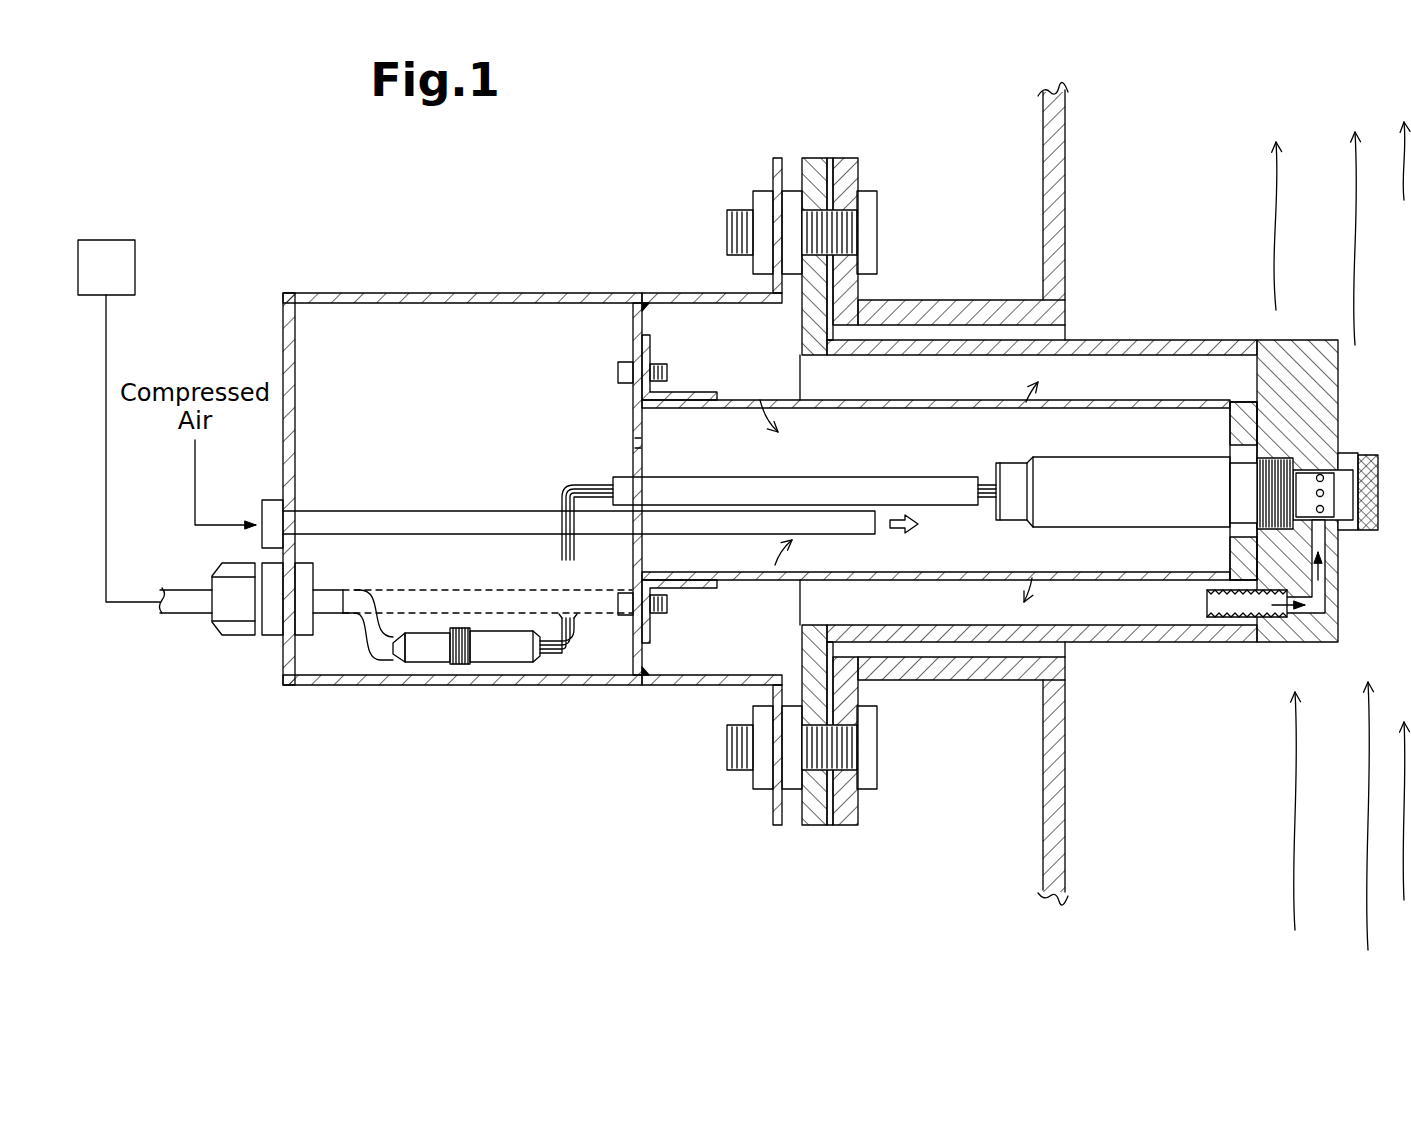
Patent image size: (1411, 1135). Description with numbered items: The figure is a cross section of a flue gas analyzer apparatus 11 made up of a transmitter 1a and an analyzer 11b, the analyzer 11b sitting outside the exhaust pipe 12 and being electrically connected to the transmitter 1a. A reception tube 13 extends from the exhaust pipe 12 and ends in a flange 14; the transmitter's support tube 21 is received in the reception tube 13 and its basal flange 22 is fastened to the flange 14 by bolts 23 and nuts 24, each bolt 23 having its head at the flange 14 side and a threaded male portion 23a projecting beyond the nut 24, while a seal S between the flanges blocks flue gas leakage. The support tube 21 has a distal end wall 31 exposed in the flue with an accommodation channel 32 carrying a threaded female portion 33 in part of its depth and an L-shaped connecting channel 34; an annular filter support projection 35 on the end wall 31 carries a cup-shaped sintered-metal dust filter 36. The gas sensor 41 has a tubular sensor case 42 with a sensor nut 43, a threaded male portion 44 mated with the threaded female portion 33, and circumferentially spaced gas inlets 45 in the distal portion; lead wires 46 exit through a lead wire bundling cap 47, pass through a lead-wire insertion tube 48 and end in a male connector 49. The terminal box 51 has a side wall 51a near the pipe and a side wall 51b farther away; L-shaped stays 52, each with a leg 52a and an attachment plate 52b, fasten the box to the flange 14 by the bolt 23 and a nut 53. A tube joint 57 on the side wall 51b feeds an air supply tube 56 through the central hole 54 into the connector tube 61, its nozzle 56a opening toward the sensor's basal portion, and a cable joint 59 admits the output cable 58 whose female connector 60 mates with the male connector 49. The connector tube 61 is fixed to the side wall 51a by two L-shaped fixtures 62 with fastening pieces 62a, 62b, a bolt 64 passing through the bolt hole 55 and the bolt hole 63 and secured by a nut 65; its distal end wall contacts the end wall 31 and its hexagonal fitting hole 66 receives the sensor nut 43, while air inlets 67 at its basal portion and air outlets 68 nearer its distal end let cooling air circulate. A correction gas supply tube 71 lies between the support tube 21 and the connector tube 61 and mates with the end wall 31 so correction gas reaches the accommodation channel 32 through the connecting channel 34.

The transmitter 1a is at (327, 289).
The flue gas analyzer apparatus 11 is at (318, 192).
The analyzer 11b is at (110, 240).
The exhaust pipe 12 is at (1043, 168).
The reception tube 13 is at (950, 300).
The flange 14 is at (845, 158).
The seal S is at (830, 158).
The support tube 21 is at (1110, 340).
The flange 22 is at (810, 131).
The bolt 23 is at (877, 205).
The threaded male portion 23a is at (727, 216).
The nut 24 is at (792, 274).
The distal end wall 31 is at (1291, 340).
The accommodation channel 32 is at (1305, 465).
The threaded female portion 33 is at (1268, 458).
The connecting channel 34 is at (1326, 608).
The filter support projection 35 is at (1348, 453).
The dust filter 36 is at (1372, 455).
The gas sensor 41 is at (1108, 454).
The sensor case 42 is at (1138, 458).
The sensor nut 43 is at (1240, 493).
The threaded male portion 44 is at (1252, 540).
The gas inlets 45 is at (1336, 520).
The lead wires 46 is at (568, 483).
The lead wire bundling cap 47 is at (996, 465).
The lead-wire insertion tube 48 is at (858, 477).
The male connector 49 is at (495, 665).
The terminal box 51 is at (468, 292).
The side wall 51a is at (633, 327).
The side wall 51b is at (283, 342).
The stay 52 is at (646, 292).
The leg 52a is at (713, 292).
The attachment plate 52b is at (776, 157).
The nut 53 is at (760, 191).
The central hole 54 is at (643, 445).
The bolt hole 55 is at (618, 372).
The air supply tube 56 is at (458, 511).
The nozzle 56a is at (880, 535).
The tube joint 57 is at (270, 500).
The output cable 58 is at (191, 590).
The cable joint 59 is at (237, 638).
The female connector 60 is at (430, 665).
The connector tube 61 is at (935, 400).
The fixture 62 is at (722, 322).
The fastening piece 62a is at (682, 392).
The fastening piece 62b is at (650, 345).
The bolt hole 63 is at (651, 624).
The bolt 64 is at (618, 604).
The nut 65 is at (668, 592).
The fitting hole 66 is at (1232, 443).
The air inlets 67 is at (762, 398).
The air outlets 68 is at (1042, 390).
The correction gas supply tube 71 is at (1128, 612).